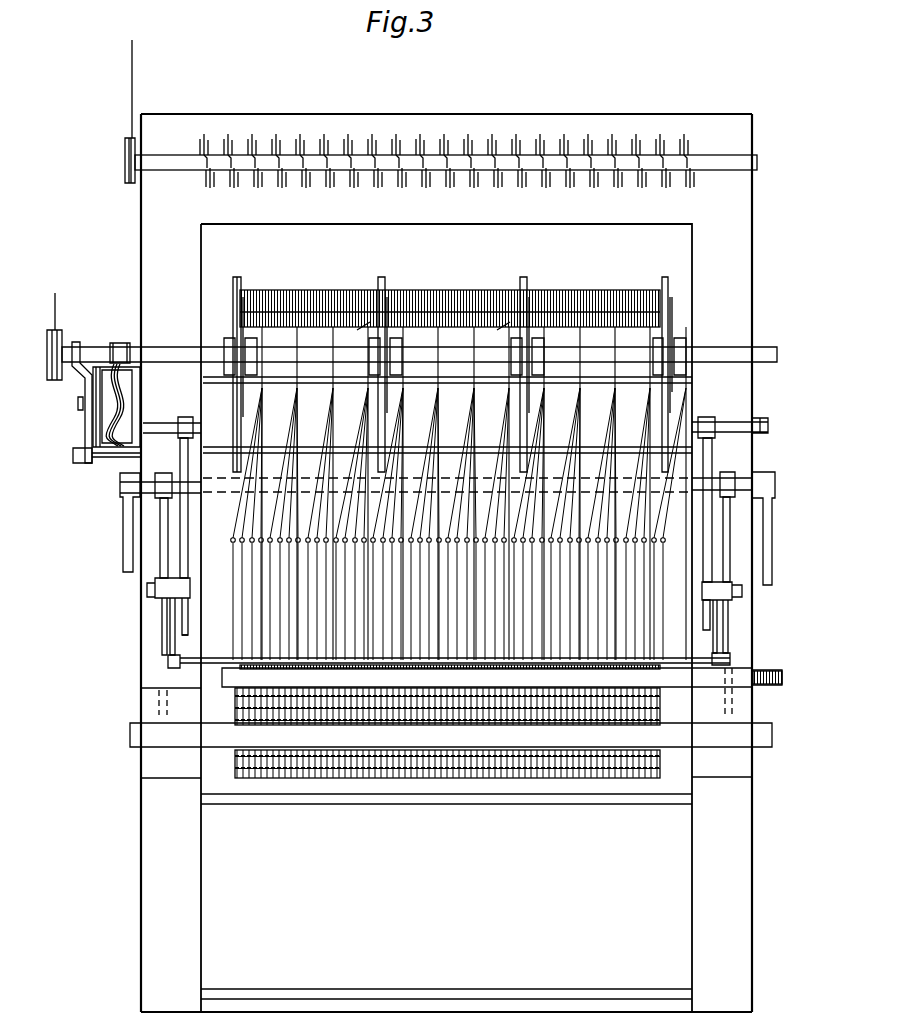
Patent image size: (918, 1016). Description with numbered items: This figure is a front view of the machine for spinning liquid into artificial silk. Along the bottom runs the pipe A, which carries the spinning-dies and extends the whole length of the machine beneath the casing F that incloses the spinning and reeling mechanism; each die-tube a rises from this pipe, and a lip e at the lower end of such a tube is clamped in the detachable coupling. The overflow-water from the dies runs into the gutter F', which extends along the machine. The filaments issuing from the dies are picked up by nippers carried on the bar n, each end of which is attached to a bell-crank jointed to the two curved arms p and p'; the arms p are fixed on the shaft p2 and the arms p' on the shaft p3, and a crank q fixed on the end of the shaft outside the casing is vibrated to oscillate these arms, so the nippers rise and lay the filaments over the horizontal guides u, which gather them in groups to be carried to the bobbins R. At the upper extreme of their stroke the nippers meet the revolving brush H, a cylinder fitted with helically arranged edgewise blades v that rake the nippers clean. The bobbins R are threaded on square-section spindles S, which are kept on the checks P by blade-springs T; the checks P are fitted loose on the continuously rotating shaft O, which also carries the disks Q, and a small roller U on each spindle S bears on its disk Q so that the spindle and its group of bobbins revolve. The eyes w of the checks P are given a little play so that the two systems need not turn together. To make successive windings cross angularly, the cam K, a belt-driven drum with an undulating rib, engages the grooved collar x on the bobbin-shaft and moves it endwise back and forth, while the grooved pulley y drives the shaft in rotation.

The revolving brush H is at (606, 156).
The blade-springs T is at (447, 364).
The bobbins R is at (450, 299).
The spindles S is at (236, 308).
The roller U is at (238, 324).
The blades (brush) / undulating projecting rib (cam) v is at (673, 318).
The continuously-rotating shaft O is at (419, 352).
The checks P is at (443, 356).
The disks Q is at (465, 356).
The eyes of the checks w is at (447, 371).
The collar x is at (118, 345).
The grooved pulley y is at (51, 348).
The cam K is at (115, 405).
The casing F is at (123, 407).
The shaft p3 is at (73, 455).
The shaft p2 is at (120, 488).
The crank q is at (442, 528).
The curved arm p' is at (441, 510).
The curved arm p is at (444, 541).
The lip e is at (186, 638).
The horizontal guides u is at (448, 532).
The bar n is at (234, 652).
The gutter F' is at (502, 680).
The die-tube a is at (442, 731).
The pipe A is at (451, 735).